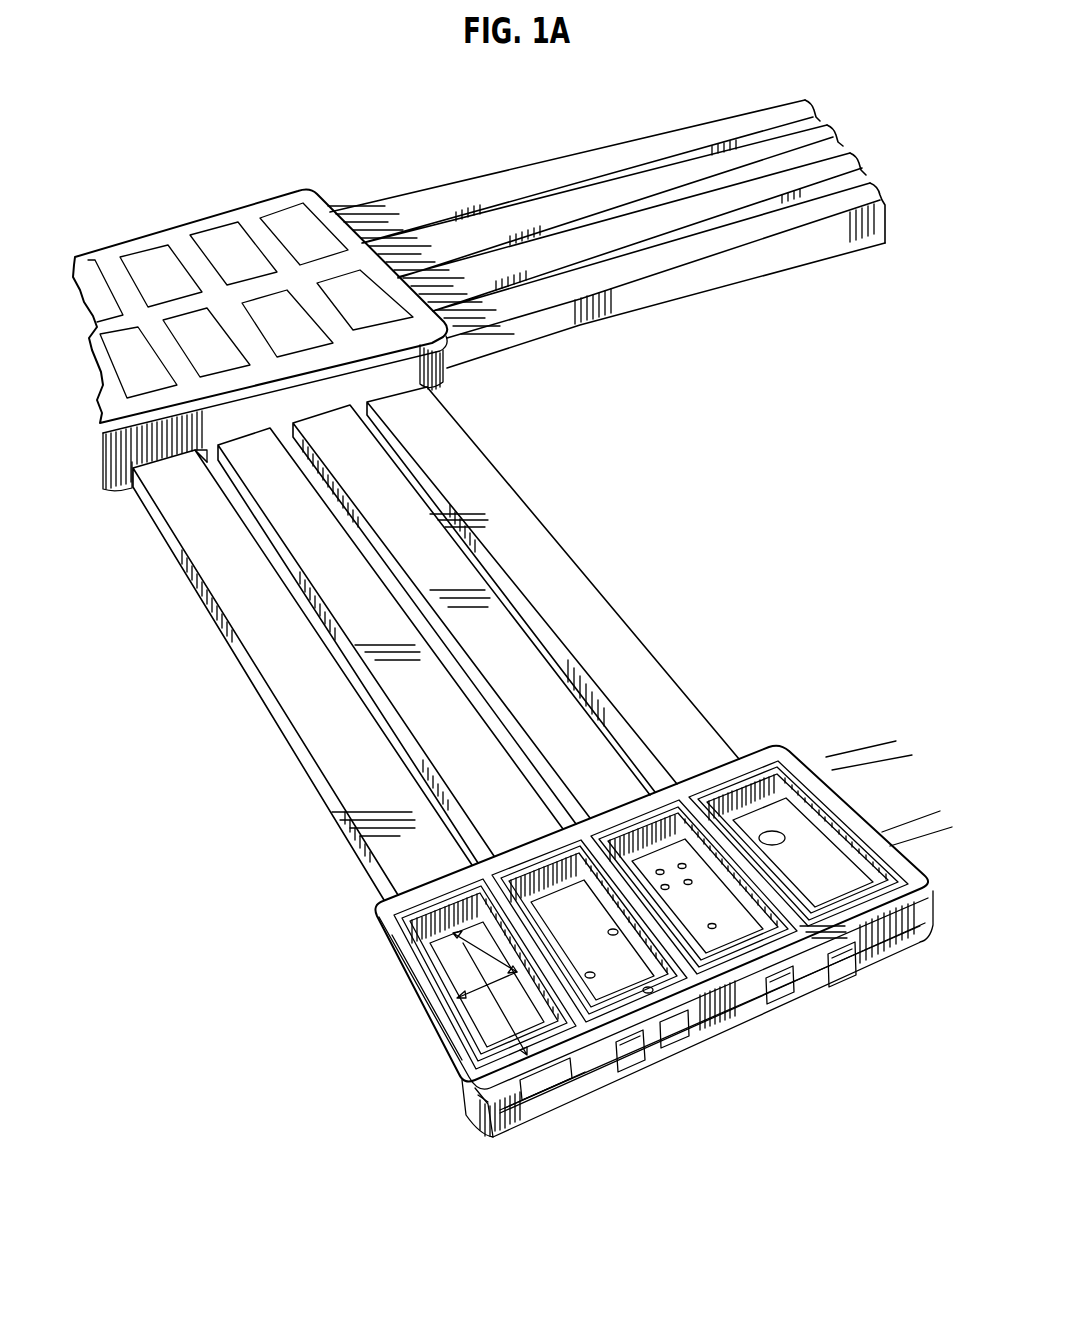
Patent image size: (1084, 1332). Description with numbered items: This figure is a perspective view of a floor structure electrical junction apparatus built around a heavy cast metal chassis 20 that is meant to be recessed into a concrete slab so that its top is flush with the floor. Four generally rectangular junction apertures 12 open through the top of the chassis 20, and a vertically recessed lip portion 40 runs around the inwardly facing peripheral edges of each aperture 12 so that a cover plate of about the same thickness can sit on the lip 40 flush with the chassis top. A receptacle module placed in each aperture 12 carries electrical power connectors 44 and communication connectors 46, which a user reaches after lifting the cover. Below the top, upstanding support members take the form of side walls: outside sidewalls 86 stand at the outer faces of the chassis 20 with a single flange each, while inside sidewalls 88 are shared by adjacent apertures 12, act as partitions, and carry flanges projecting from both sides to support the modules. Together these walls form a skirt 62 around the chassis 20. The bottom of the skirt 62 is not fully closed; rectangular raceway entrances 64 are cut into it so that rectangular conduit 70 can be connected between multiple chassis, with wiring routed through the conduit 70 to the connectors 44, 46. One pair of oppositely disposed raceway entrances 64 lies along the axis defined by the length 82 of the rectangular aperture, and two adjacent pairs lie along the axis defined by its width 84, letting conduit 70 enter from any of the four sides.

The junction aperture 12 is at (557, 897).
The chassis 20 is at (470, 1080).
The recessed lip portion 40 is at (607, 1075).
The electrical power connector 44 is at (773, 818).
The communication connector 46 is at (655, 1030).
The skirt 62 is at (913, 957).
The raceway entrance 64 is at (850, 970).
The rectangular conduit 70 is at (338, 818).
The length of the rectangular aperture 82 is at (440, 985).
The width of the rectangular aperture 84 is at (473, 1077).
The outside sidewall 86 is at (417, 1018).
The inside sidewall 88 is at (790, 872).